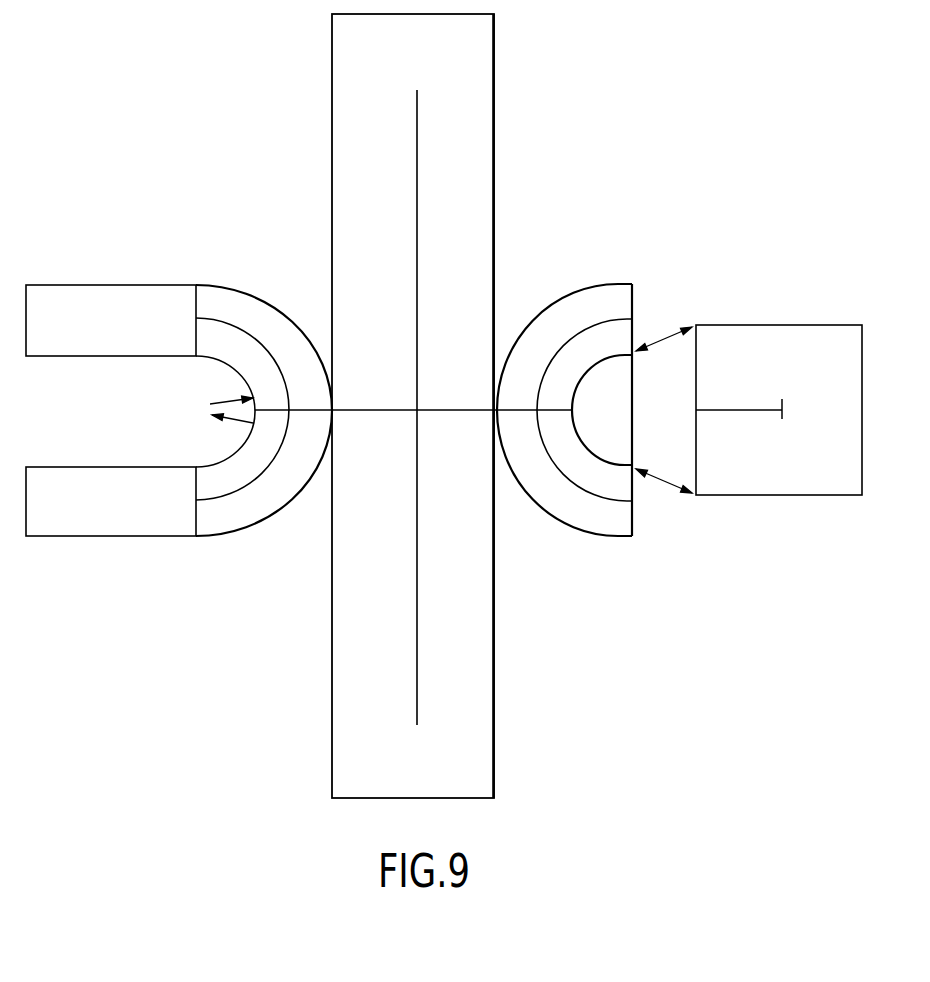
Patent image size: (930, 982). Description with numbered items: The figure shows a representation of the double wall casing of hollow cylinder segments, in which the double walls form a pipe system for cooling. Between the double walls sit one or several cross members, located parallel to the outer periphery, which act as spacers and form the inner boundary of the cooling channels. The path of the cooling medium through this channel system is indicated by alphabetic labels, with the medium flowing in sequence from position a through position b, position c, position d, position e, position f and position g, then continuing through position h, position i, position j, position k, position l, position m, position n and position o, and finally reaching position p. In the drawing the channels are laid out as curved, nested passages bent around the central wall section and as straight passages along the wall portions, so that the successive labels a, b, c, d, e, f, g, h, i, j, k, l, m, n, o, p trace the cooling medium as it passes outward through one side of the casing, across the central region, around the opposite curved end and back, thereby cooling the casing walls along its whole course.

The cooling medium flow position a is at (235, 411).
The cooling medium flow position b is at (196, 318).
The cooling medium flow position c is at (259, 409).
The cooling medium flow position d is at (413, 406).
The cooling medium flow position e is at (438, 407).
The cooling medium flow position f is at (563, 410).
The cooling medium flow position g is at (594, 410).
The cooling medium flow position h is at (779, 410).
The cooling medium flow position i is at (739, 424).
The cooling medium flow position j is at (625, 410).
The cooling medium flow position k is at (570, 410).
The cooling medium flow position l is at (455, 424).
The cooling medium flow position m is at (374, 424).
The cooling medium flow position n is at (264, 410).
The cooling medium flow position o is at (196, 500).
The cooling medium flow position p is at (272, 424).